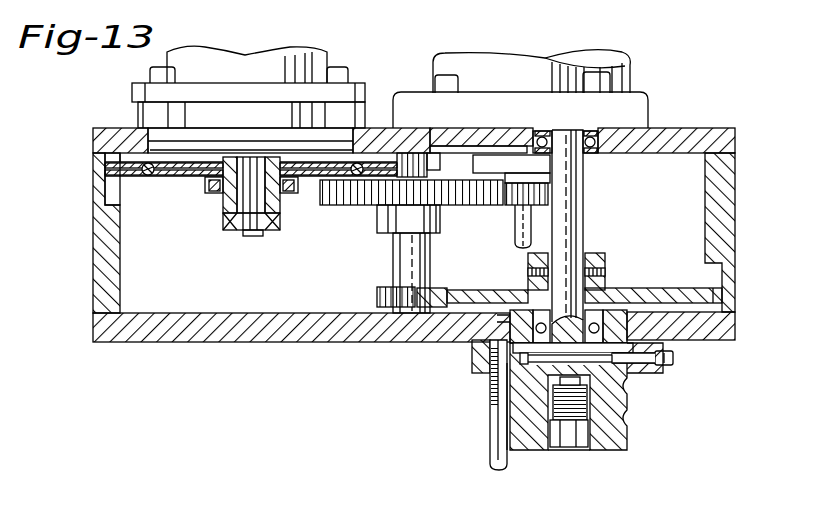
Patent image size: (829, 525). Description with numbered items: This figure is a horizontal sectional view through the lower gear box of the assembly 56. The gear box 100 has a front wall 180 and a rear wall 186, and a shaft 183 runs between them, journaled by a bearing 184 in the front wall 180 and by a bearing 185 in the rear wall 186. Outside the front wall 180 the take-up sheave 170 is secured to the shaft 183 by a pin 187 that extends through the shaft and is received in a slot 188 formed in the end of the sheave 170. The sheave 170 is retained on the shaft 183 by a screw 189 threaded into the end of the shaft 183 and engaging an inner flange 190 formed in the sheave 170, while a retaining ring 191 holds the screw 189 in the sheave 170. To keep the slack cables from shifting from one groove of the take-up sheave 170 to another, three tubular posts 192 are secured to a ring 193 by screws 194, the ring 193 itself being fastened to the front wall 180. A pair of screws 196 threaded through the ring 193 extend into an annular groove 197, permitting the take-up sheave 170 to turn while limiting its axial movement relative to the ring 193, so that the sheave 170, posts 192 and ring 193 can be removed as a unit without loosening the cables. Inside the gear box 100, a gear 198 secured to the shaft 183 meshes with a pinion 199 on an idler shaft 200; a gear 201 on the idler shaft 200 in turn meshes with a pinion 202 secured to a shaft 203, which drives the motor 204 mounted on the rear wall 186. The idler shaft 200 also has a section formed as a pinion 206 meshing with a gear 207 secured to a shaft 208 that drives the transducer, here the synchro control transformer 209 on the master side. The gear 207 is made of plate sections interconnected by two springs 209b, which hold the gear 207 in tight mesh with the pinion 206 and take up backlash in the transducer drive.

The assembly 56 is at (202, 362).
The gear box 100 is at (145, 347).
The front wall 180 is at (312, 332).
The rear wall 186 is at (663, 135).
The bearing 185 is at (545, 150).
The synchro control transformer 209 is at (313, 63).
The motor 204 is at (490, 63).
The shaft 183 is at (572, 193).
The pinion 206 is at (420, 165).
The springs 209b is at (148, 175).
The gear 207 is at (198, 178).
The shaft 208 is at (253, 228).
The gear 201 is at (377, 197).
The pinion 202 is at (517, 197).
The shaft 203 is at (520, 230).
The idler shaft 200 is at (400, 245).
The pinion 199 is at (377, 293).
The gear 198 is at (500, 285).
The bearing 184 is at (612, 315).
The take-up sheave 170 is at (620, 427).
The screws 196 is at (675, 357).
The annular groove 197 is at (627, 372).
The pin 187 is at (537, 360).
The slot 188 is at (510, 363).
The ring 193 is at (472, 348).
The screws 194 is at (497, 445).
The tubular posts 192 is at (503, 410).
The inner flange 190 is at (550, 423).
The screw 189 is at (567, 440).
The retaining ring 191 is at (582, 440).